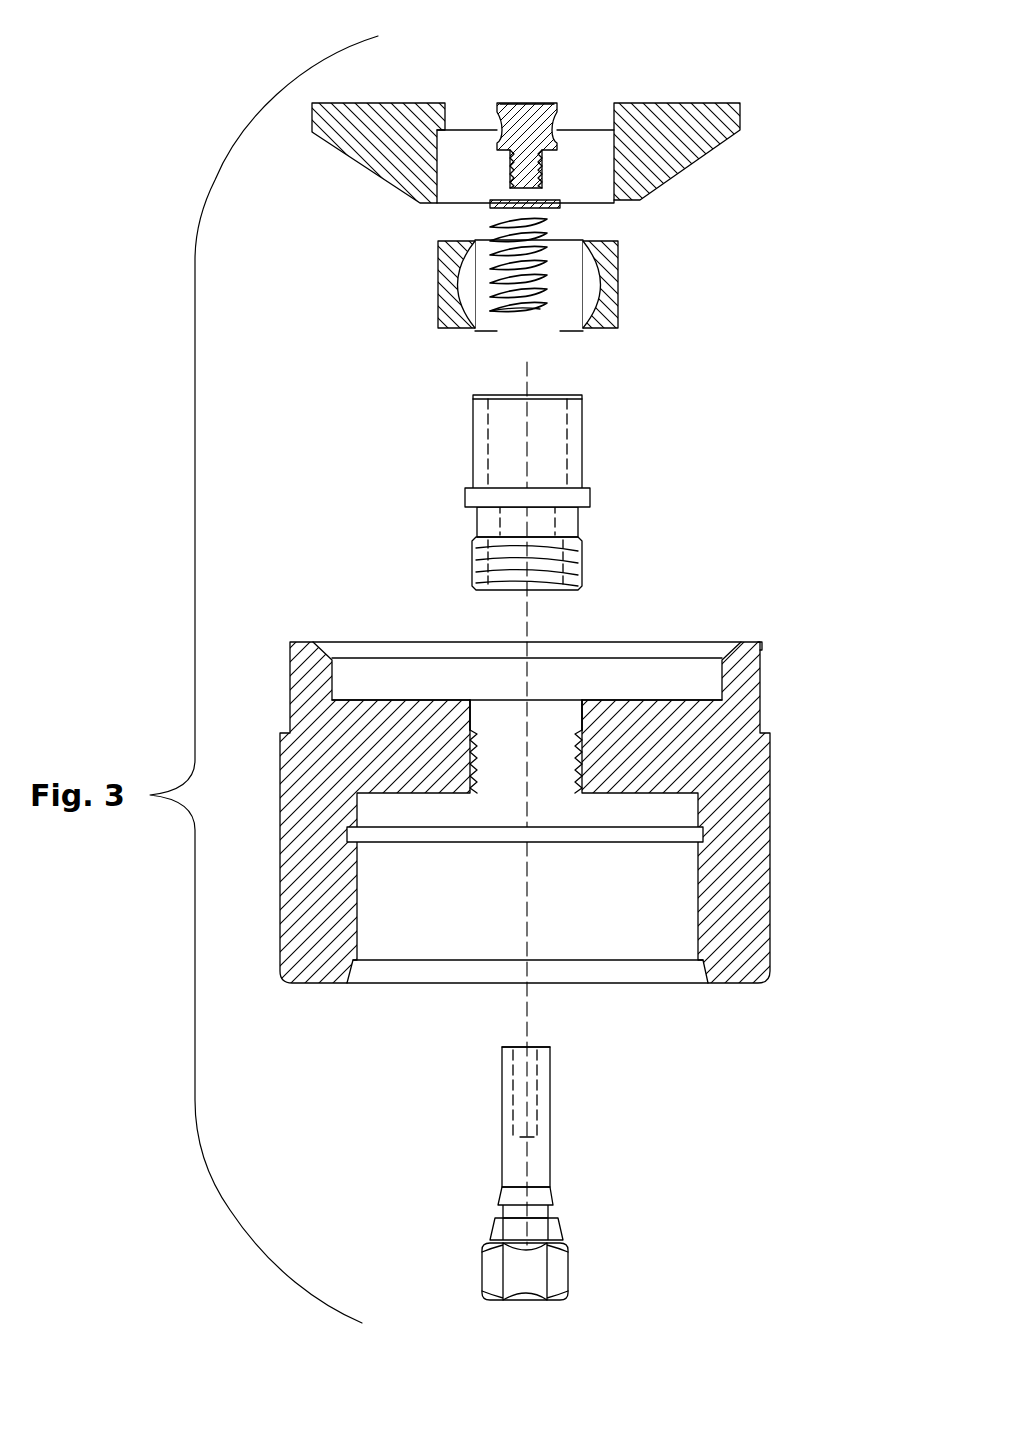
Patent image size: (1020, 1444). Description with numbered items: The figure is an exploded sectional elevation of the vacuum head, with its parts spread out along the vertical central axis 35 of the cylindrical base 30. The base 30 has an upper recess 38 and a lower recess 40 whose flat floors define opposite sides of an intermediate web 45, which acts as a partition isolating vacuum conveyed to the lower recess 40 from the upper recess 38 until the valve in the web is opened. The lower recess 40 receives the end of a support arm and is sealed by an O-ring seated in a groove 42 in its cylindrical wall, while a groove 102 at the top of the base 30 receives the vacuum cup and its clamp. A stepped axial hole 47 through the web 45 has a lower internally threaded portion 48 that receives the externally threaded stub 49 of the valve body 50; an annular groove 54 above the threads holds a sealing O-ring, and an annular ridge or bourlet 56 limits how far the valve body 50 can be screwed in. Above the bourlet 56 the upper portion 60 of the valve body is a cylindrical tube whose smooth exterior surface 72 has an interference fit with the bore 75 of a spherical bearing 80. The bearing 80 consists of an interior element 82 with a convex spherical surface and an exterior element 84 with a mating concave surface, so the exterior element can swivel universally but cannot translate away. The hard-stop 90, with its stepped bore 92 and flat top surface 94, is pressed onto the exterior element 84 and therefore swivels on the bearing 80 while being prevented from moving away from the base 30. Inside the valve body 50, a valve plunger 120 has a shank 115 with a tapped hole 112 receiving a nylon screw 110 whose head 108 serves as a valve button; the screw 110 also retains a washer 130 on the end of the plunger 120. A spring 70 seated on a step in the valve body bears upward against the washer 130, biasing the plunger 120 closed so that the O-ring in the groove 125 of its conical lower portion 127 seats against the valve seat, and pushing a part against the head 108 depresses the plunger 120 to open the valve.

The cylindrical base 30 is at (593, 805).
The central axis 35 is at (527, 373).
The upper recess 38 is at (728, 690).
The lower recess 40 is at (695, 902).
The groove 42 is at (677, 835).
The intermediate web 45 is at (627, 753).
The stepped axial hole 47 is at (548, 708).
The internally threaded portion 48 is at (478, 770).
The externally threaded stub 49 is at (470, 562).
The valve body 50 is at (557, 482).
The annular groove 54 is at (578, 527).
The annular ridge or bourlet 56 is at (465, 492).
The upper portion of the valve body 60 is at (470, 425).
The spring 70 is at (490, 228).
The exterior surface 72 is at (587, 440).
The bore 75 is at (538, 330).
The spherical bearing 80 is at (544, 282).
The interior element 82 is at (610, 345).
The exterior element 84 is at (440, 335).
The hard-stop 90 is at (566, 105).
The stepped bore 92 is at (462, 147).
The flat top surface 94 is at (660, 100).
The groove 102 is at (758, 683).
The head 108 is at (553, 112).
The nylon screw 110 is at (527, 93).
The tapped hole 112 is at (530, 1062).
The shank 115 is at (500, 1127).
The valve plunger 120 is at (541, 1150).
The groove 125 is at (560, 1215).
The conical lower portion 127 is at (492, 1226).
The washer 130 is at (560, 205).